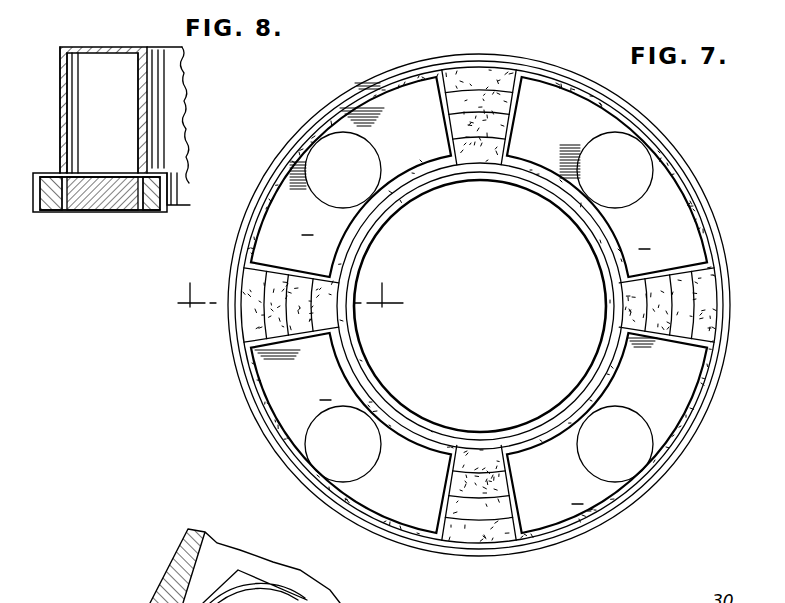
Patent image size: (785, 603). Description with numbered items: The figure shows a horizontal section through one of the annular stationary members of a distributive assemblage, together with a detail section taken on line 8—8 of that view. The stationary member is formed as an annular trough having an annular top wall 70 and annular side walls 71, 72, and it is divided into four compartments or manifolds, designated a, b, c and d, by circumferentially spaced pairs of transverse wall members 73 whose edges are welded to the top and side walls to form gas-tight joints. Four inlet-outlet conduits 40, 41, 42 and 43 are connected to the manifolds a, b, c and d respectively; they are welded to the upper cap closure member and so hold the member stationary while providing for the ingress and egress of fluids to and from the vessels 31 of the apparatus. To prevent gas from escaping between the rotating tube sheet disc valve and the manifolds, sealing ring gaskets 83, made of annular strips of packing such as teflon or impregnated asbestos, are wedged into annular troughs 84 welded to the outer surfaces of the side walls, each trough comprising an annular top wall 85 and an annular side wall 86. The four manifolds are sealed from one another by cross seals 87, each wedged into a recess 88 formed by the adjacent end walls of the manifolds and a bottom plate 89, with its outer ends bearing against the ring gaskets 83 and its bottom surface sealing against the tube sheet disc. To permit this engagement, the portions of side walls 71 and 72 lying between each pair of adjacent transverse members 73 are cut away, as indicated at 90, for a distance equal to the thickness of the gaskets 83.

In FIG. 7, the section line 8— 8 is at (283, 295).
In FIG. 7, the vessel 31 is at (152, 592).
In FIG. 7, the inlet-outlet conduit 40 is at (370, 158).
In FIG. 7, the inlet-outlet conduit 41 is at (372, 465).
In FIG. 7, the inlet-outlet conduit 42 is at (630, 416).
In FIG. 7, the inlet-outlet conduit 43 is at (636, 192).
In FIG. 8, the annular top wall 70 is at (100, 48).
In FIG. 8, the annular side wall 71 is at (62, 125).
In FIG. 7, the annular side wall 71 is at (376, 97).
In FIG. 8, the annular side wall 72 is at (145, 116).
In FIG. 7, the annular side wall 72 is at (428, 158).
In FIG. 8, the wall member 73 is at (130, 102).
In FIG. 7, the wall member 73 is at (447, 118).
In FIG. 8, the sealing ring gasket 83 is at (60, 216).
In FIG. 7, the sealing ring gasket 83 is at (555, 418).
In FIG. 8, the annular trough 84 is at (36, 174).
In FIG. 7, the annular trough 84 is at (420, 423).
In FIG. 8, the annular top wall 85 is at (58, 175).
In FIG. 8, the annular side wall 86 is at (41, 206).
In FIG. 8, the cross seal 87 is at (97, 212).
In FIG. 7, the cross seal 87 is at (478, 68).
In FIG. 7, the recess 88 is at (522, 70).
In FIG. 8, the bottom plate 89 is at (108, 173).
In FIG. 8, the cut-away portion 90 is at (123, 212).